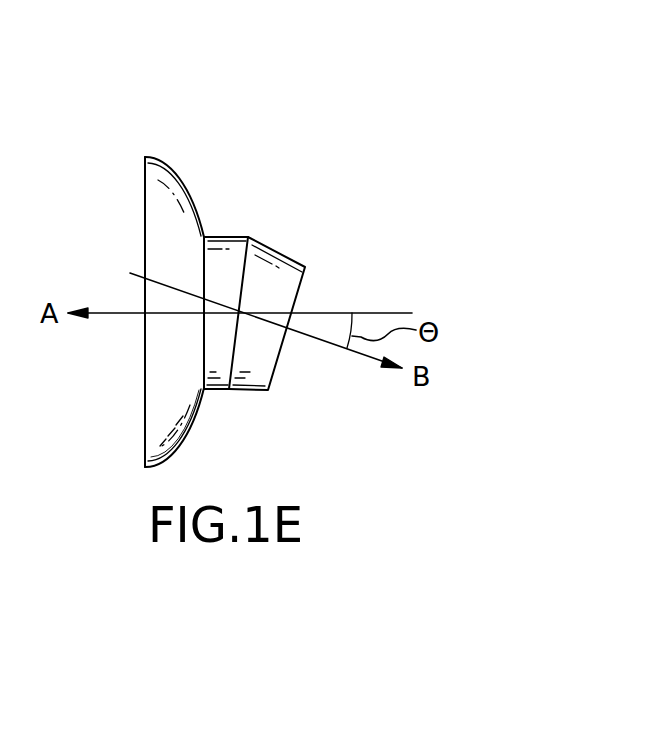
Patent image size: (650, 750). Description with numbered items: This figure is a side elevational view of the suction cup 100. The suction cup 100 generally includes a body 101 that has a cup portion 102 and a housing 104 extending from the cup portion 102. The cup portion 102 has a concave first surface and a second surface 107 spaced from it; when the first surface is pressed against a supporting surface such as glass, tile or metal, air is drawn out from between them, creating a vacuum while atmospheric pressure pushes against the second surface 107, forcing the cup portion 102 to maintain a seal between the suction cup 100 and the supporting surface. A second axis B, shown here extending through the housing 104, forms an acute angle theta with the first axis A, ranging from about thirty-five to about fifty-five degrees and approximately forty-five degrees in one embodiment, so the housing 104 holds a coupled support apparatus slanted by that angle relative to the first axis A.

The suction cup 100 is at (277, 97).
The body 101 is at (205, 415).
The cup portion 102 is at (145, 407).
The housing 104 is at (231, 236).
The second surface 107 is at (178, 176).